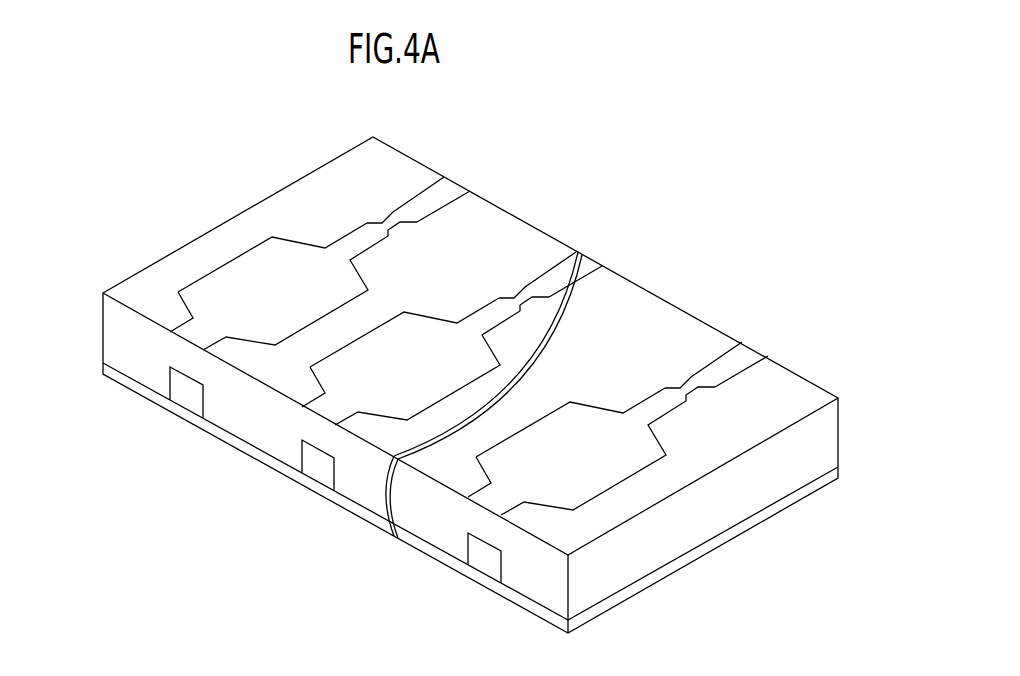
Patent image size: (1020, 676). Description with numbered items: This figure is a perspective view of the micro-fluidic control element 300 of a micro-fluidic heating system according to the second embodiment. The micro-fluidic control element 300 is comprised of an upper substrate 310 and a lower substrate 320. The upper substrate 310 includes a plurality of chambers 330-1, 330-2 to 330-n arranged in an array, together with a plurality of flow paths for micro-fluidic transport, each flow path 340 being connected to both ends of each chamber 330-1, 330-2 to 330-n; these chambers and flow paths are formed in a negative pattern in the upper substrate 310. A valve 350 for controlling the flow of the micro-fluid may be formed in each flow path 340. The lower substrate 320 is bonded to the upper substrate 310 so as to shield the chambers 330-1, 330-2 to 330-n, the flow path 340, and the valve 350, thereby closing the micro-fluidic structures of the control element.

The micro-fluidic control element 300 is at (843, 378).
The upper substrate 310 is at (104, 331).
The lower substrate 320 is at (106, 371).
The chamber 330-1 is at (238, 280).
The chamber 330-2 is at (420, 337).
The chamber 330-n is at (593, 427).
The flow path 340 is at (187, 333).
The valve 350 is at (393, 210).